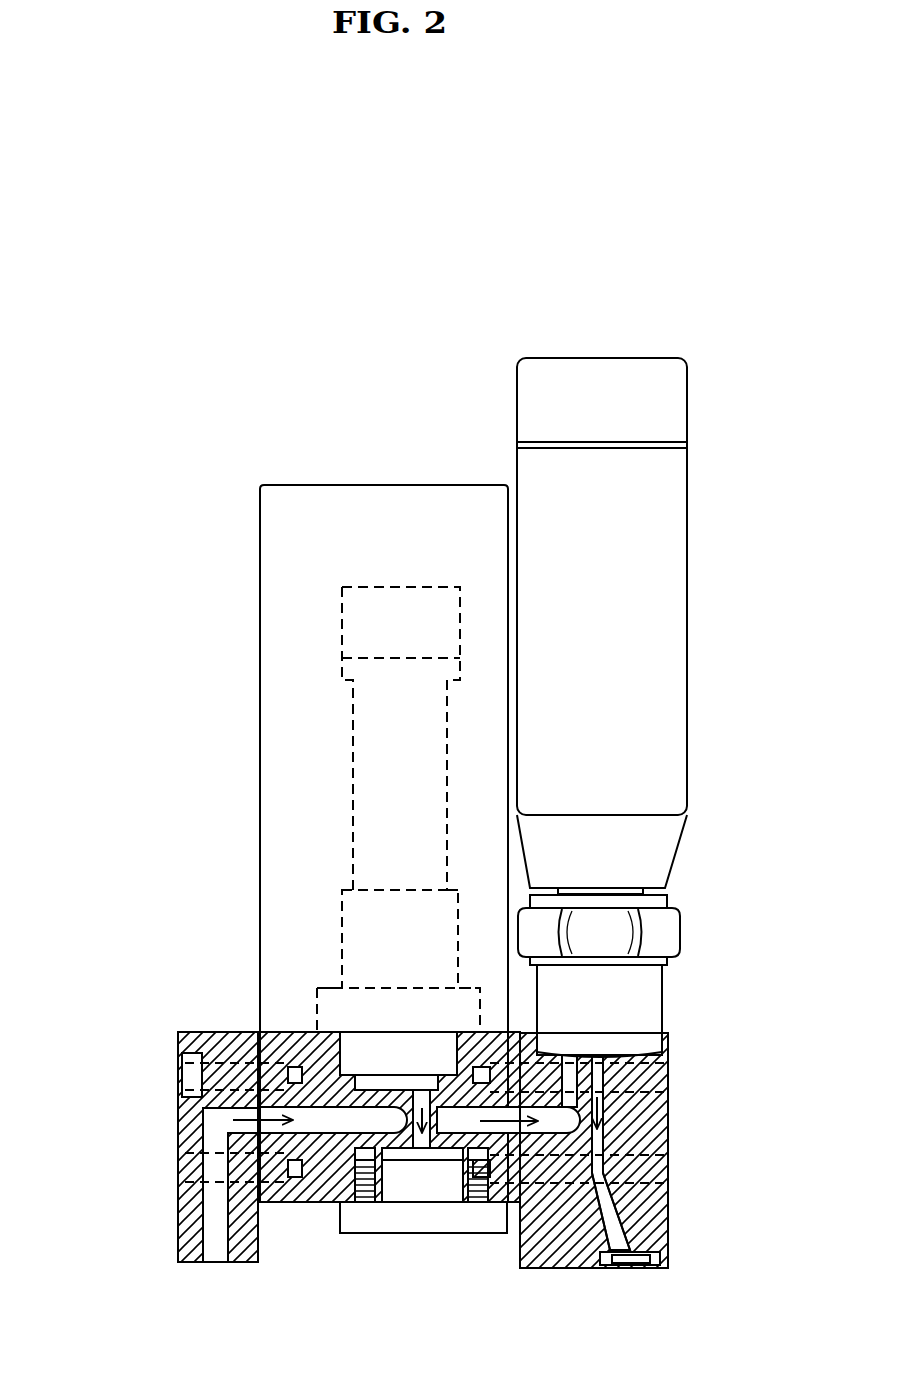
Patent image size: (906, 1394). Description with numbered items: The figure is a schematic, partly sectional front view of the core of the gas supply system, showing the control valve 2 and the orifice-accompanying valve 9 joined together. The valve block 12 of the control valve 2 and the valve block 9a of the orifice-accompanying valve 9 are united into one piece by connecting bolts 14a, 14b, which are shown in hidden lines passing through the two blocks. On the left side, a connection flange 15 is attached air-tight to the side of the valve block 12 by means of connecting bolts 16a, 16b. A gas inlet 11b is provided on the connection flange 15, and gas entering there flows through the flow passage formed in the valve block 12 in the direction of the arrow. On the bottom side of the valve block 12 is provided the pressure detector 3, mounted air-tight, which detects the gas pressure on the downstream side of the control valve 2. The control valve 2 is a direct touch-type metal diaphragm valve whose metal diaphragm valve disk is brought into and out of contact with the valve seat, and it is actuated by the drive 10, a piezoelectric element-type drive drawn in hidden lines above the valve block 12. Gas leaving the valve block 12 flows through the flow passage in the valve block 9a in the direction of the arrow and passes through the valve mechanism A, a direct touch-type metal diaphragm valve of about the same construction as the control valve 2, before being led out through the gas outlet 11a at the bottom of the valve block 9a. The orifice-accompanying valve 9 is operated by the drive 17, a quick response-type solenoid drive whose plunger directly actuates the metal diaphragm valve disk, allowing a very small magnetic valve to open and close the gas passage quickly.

The control valve 2 is at (250, 877).
The pressure detector 3 is at (436, 1172).
The orifice-accompanying valve 9 is at (690, 934).
The valve block 9a is at (668, 1228).
The drive 10 is at (350, 790).
The gas outlet 11a is at (630, 1266).
The gas inlet 11b is at (217, 1248).
The valve block 12 is at (300, 1203).
The connecting bolt 14a is at (670, 1073).
The connecting bolt 14b is at (670, 1170).
The connection flange 15 is at (192, 1233).
The connecting bolt 16a is at (178, 1078).
The connecting bolt 16b is at (178, 1165).
The drive 17 is at (653, 683).
The valve mechanism A is at (602, 1045).